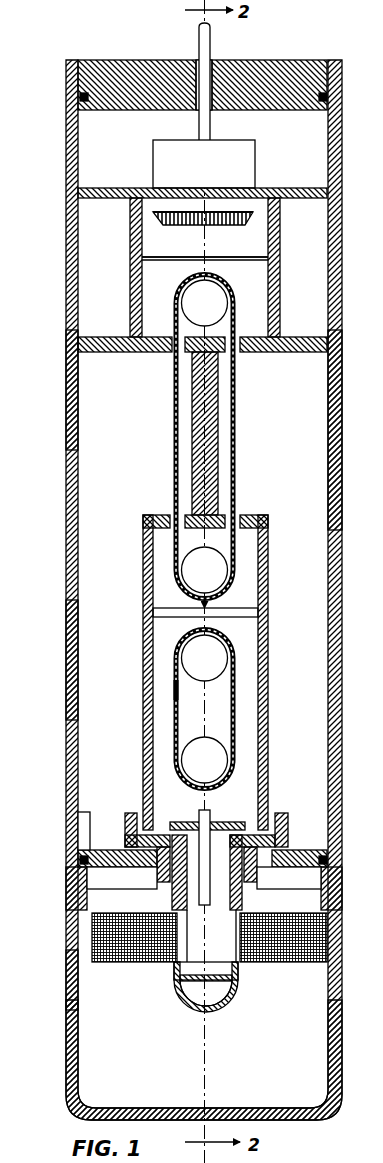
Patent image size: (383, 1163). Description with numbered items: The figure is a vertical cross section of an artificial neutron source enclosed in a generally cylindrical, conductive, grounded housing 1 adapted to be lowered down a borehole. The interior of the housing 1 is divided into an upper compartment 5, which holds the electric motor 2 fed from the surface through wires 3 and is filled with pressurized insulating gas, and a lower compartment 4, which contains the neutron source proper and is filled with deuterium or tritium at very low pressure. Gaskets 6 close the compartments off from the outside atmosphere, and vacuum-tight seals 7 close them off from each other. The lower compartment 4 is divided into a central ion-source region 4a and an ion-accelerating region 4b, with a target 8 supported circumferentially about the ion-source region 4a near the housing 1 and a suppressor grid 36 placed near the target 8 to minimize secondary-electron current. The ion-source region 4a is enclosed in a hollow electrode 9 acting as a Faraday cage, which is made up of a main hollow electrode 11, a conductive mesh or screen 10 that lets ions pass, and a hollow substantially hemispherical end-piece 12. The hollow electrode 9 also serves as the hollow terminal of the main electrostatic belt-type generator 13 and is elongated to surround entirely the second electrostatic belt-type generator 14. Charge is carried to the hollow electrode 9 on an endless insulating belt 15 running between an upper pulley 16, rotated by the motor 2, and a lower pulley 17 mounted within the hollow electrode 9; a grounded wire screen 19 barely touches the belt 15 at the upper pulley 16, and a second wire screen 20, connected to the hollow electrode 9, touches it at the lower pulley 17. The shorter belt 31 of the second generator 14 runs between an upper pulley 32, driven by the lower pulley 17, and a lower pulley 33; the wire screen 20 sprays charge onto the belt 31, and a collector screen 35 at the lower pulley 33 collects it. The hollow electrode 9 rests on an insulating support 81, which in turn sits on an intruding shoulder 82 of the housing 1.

The housing 1 is at (66, 468).
The electric motor 2 is at (250, 167).
The wires 3 is at (206, 138).
The lower compartment 4 is at (98, 1005).
The ion-source region 4a is at (200, 950).
The ion-accelerating region 4b is at (150, 963).
The upper compartment 5 is at (85, 385).
The gaskets 6 is at (327, 98).
The vacuum-tight seals 7 is at (233, 823).
The target 8 is at (330, 950).
The hollow electrode 9 is at (100, 660).
The conductive mesh or screen 10 is at (232, 966).
The main hollow electrode 11 is at (268, 690).
The hemispherical end-piece 12 is at (209, 1012).
The main electrostatic belt-type generator 13 is at (300, 438).
The second electrostatic belt-type generator 14 is at (248, 737).
The endless belt 15 is at (234, 408).
The upper pulley 16 is at (215, 297).
The lower pulley 17 is at (219, 581).
The wire screen 19 is at (207, 266).
The second wire screen 20 is at (205, 627).
The belt 31 is at (177, 683).
The upper pulley 32 is at (223, 662).
The lower pulley 33 is at (220, 774).
The collector screen 35 is at (204, 790).
The suppressor grid 36 is at (80, 978).
The insulating support 81 is at (278, 813).
The intruding shoulder 82 is at (302, 870).